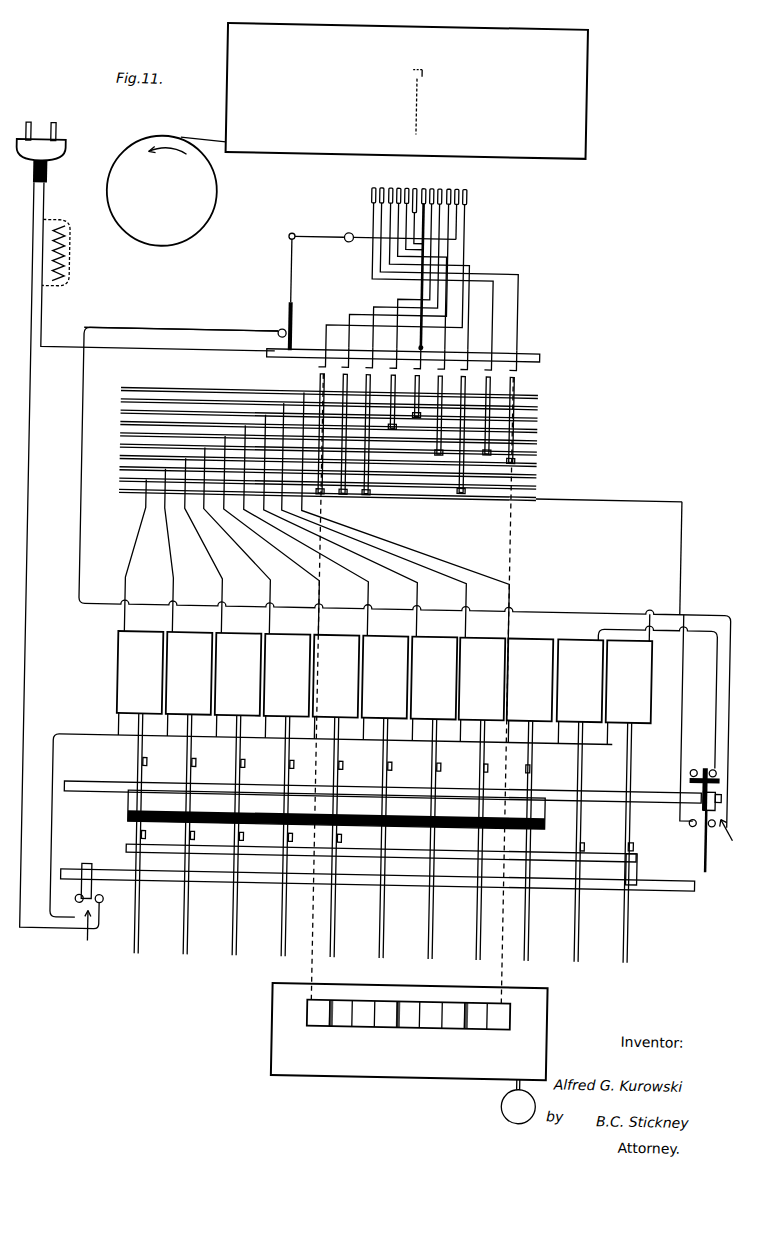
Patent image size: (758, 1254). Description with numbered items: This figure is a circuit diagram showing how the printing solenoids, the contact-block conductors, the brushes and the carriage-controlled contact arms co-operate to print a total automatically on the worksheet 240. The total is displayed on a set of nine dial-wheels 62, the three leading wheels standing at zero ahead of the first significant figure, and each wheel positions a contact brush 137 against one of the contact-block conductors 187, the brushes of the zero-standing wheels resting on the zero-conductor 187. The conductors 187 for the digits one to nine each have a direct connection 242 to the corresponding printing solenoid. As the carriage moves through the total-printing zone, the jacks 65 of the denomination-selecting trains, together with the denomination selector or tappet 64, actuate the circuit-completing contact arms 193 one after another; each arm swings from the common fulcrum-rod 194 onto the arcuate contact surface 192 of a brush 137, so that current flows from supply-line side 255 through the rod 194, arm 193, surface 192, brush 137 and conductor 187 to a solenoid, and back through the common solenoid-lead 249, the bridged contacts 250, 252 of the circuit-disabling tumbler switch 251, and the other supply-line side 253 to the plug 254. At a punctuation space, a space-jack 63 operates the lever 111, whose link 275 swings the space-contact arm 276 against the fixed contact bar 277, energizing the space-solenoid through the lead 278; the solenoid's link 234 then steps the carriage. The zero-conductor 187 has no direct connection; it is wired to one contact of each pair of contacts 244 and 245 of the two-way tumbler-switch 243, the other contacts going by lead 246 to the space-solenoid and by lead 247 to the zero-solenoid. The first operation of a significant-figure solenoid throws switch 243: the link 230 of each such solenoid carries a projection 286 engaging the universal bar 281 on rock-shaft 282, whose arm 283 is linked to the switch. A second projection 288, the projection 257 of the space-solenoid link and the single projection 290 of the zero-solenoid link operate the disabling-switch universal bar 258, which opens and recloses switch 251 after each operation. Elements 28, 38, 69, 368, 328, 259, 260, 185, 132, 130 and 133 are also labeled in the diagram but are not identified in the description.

The worksheet 240 is at (578, 113).
The print column indicator 28 is at (408, 118).
The drum 38 is at (166, 191).
The plug 254 is at (53, 143).
The side of current-supply line 253 is at (22, 628).
The side of supply-line 255 is at (38, 214).
The punctuation-space jack 63 is at (372, 186).
The denomination selector or tappet 64 is at (407, 188).
The jacks 65 is at (416, 186).
The conductors 69 is at (335, 328).
The coupled lever 111 is at (338, 234).
The link 275 is at (286, 280).
The fixed contact bar 277 is at (275, 331).
The space-contact arm 276 is at (270, 352).
The common fulcrum-rod 194 is at (535, 354).
The circuit-completing contact arms 193 is at (512, 348).
The arcuate contact surface 192 is at (340, 380).
The contact brushes 137 is at (416, 418).
The contact-block conductors 187 is at (172, 410).
The lead 278 is at (79, 511).
The direct connection 242 is at (160, 560).
The conductor 368 is at (680, 535).
The lead 246 is at (726, 607).
The lead 247 is at (728, 676).
The pair of contacts 245 is at (707, 758).
The arm 283 is at (706, 792).
The pair of contacts 244 is at (699, 821).
The two-way tumbler-switch 243 is at (735, 841).
The rod 328 is at (712, 864).
The rock-shaft 282 is at (622, 794).
The universal bar 281 is at (430, 825).
The projection 288 is at (580, 850).
The projection 290 is at (588, 836).
The disabling switch universal bar 258 is at (618, 848).
The projection 257 is at (640, 838).
The bar 259 is at (698, 887).
The switch arm 260 is at (98, 892).
The contact 250 is at (81, 906).
The contact 252 is at (108, 908).
The circuit-disabling tumbler switch 251 is at (87, 935).
The common connection 249 is at (92, 741).
The projection 286 is at (194, 764).
The keys 185 is at (385, 674).
The link 230 is at (172, 962).
The link 234 is at (636, 936).
The register 132 is at (280, 1043).
The dial-wheels 62 is at (440, 1028).
The shaft 130 is at (525, 1086).
The total key 133 is at (511, 1106).